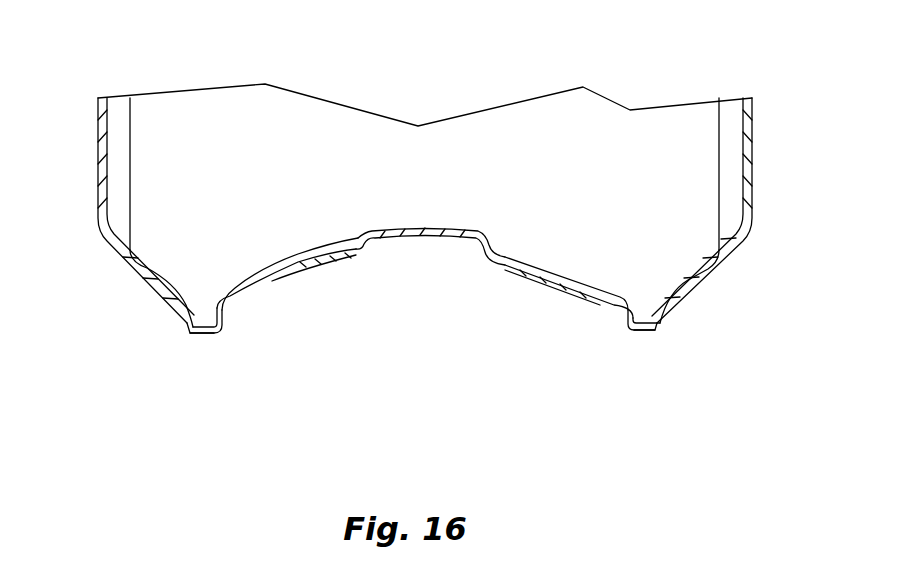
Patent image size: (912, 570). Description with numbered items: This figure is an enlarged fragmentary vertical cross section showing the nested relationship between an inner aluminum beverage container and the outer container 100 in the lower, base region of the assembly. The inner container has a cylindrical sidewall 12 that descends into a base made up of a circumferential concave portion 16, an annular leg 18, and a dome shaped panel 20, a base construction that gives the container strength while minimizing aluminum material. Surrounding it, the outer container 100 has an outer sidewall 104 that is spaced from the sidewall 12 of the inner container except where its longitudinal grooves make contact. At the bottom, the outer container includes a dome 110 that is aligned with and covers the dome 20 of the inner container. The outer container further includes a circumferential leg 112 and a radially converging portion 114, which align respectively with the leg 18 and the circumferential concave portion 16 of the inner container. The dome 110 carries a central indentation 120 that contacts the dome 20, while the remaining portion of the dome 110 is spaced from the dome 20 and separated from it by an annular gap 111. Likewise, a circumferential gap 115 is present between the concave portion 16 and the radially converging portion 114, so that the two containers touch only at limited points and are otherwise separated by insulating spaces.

The outer container 100 is at (70, 145).
The sidewall 12 is at (131, 128).
The circumferential concave portion 16 is at (159, 273).
The circumferential leg 18 is at (200, 327).
The dome shaped panel 20 is at (295, 253).
The outer sidewall 104 is at (99, 190).
The dome 110 is at (273, 280).
The annular gap 111 is at (347, 245).
The circumferential leg 112 is at (209, 333).
The radially converging portion 114 is at (148, 287).
The circumferential gap 115 is at (167, 288).
The central indentation 120 is at (427, 238).